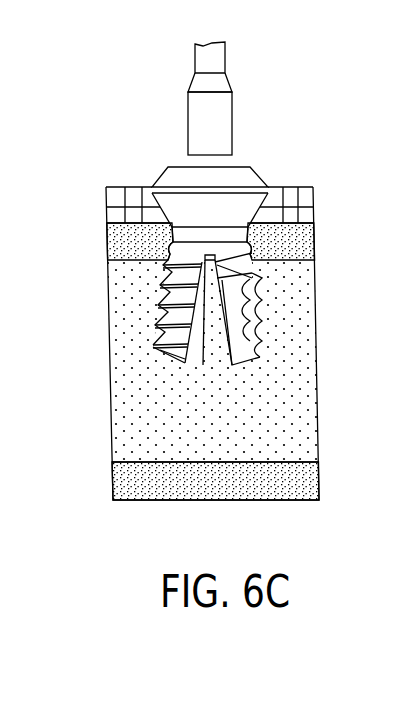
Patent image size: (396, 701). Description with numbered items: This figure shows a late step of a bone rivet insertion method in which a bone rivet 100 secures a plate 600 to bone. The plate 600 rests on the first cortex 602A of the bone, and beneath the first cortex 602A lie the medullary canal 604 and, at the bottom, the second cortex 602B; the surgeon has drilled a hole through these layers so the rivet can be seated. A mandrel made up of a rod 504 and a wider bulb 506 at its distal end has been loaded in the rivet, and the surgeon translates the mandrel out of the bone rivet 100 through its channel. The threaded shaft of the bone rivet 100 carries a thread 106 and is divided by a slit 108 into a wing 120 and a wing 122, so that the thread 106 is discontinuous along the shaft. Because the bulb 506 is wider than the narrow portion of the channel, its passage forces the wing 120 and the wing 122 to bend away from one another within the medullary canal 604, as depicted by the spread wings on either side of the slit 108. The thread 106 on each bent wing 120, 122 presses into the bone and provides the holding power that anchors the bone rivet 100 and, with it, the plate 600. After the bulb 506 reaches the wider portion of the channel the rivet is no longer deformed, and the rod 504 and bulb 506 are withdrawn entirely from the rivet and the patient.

The bone rivet 100 is at (265, 182).
The thread 106 is at (158, 317).
The slit 108 is at (204, 358).
The wing 120 is at (166, 361).
The wing 122 is at (247, 361).
The rod 504 is at (203, 60).
The bulb 506 is at (220, 118).
The plate 600 is at (302, 206).
The first cortex 602A is at (305, 244).
The second cortex 602B is at (308, 478).
The medullary canal 604 is at (300, 422).